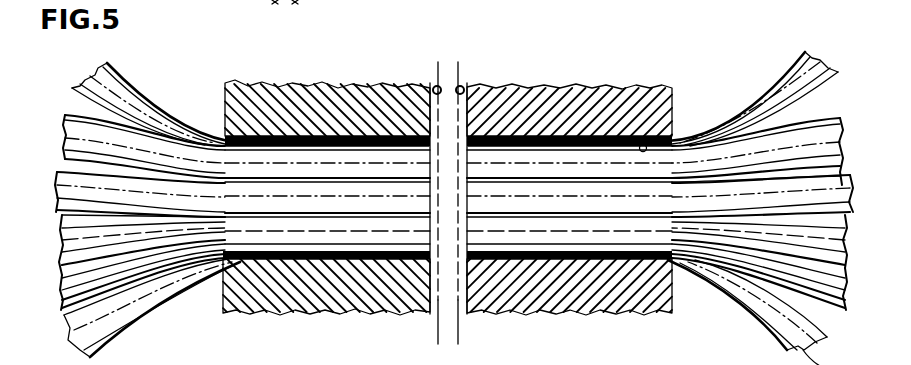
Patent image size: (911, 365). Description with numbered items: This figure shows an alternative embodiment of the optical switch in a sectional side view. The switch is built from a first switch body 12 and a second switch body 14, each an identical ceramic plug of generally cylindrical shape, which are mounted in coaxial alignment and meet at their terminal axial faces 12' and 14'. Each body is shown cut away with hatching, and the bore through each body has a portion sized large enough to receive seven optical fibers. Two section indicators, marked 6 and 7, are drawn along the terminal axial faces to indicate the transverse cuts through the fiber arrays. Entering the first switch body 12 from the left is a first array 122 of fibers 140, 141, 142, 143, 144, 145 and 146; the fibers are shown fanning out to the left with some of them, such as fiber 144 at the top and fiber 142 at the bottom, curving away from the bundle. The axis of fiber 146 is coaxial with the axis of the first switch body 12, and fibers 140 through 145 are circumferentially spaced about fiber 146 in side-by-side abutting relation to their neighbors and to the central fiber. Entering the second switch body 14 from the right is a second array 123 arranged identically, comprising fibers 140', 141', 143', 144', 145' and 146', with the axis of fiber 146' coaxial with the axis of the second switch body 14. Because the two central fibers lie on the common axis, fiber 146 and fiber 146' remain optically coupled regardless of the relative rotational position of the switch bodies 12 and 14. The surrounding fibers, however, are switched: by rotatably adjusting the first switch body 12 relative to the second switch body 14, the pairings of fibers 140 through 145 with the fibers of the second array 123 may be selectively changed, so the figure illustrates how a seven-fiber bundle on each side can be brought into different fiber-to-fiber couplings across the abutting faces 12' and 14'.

The section line 6- 6 is at (397, 351).
The section line 7- 7 is at (491, 351).
The first switch body 12 is at (326, 173).
The terminal axial face 12' is at (384, 75).
The second switch body 14 is at (609, 199).
The terminal axial face 14' is at (509, 75).
The first array 122 is at (137, 87).
The second array 123 is at (778, 82).
The fiber 140 is at (121, 196).
The fiber 141 is at (121, 288).
The fiber 142 is at (80, 348).
The fiber 143 is at (121, 261).
The fiber 144 is at (163, 201).
The fiber 145 is at (124, 221).
The fiber 146 is at (123, 149).
The fiber 140' is at (779, 240).
The fiber 141' is at (775, 297).
The fiber 143' is at (778, 143).
The fiber 144' is at (775, 82).
The fiber 145' is at (778, 128).
The fiber 146' is at (779, 203).